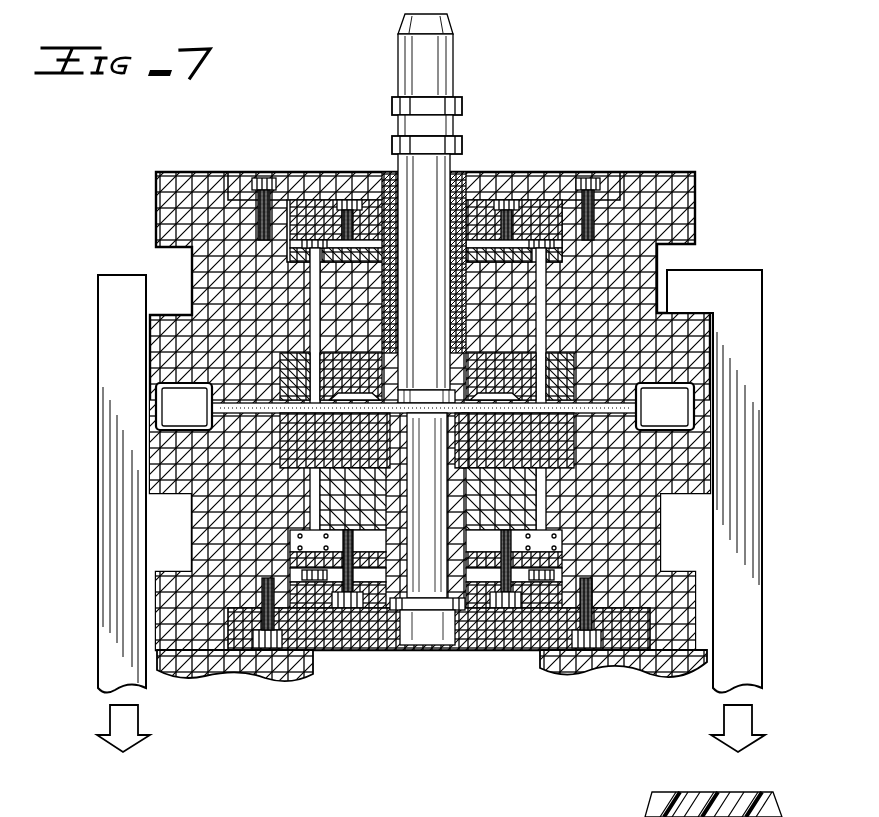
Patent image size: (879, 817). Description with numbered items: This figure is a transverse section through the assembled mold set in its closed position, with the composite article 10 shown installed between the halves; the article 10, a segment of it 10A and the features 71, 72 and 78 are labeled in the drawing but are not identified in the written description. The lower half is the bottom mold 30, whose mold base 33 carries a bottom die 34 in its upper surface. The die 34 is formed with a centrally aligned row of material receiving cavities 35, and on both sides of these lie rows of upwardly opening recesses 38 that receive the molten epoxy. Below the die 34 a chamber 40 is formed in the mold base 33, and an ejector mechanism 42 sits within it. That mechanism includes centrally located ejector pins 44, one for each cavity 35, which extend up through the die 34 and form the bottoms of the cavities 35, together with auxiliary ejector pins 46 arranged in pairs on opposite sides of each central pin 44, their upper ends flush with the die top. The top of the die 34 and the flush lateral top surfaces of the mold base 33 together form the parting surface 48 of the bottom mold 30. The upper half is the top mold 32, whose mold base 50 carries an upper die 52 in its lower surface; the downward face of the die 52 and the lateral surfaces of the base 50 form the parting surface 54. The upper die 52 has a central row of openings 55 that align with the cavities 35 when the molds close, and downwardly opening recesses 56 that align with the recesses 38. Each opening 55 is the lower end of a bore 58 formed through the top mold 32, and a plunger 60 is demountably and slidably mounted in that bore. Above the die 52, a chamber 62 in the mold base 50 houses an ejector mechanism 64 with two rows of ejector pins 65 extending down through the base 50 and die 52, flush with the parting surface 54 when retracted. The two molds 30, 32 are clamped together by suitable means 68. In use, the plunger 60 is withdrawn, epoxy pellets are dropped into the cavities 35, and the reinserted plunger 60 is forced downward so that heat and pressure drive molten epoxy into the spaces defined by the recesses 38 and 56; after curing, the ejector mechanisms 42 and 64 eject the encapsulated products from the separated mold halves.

The workpiece strip 10 is at (598, 400).
The cut workpiece segment 10A is at (780, 804).
The bottom mold 30 is at (172, 598).
The top mold 32 is at (700, 158).
The mold base 33 is at (200, 652).
The bottom die 34 is at (280, 418).
The material receiving cavities 35 is at (458, 416).
The recesses 38 is at (348, 416).
The chamber 40 is at (290, 548).
The ejector mechanism 42 is at (320, 613).
The centrally located ejector pins 44 is at (452, 625).
The auxiliary ejector pins 46 is at (302, 510).
The parting surface 48 is at (622, 410).
The mold base 50 is at (606, 182).
The upper die 52 is at (574, 375).
The parting surface 54 is at (240, 400).
The openings 55 is at (434, 390).
The recesses 56 is at (364, 396).
The bore 58 is at (448, 200).
The plunger 60 is at (455, 82).
The chamber 62 is at (518, 212).
The ejector mechanism 64 is at (328, 226).
The ejector pins 65 is at (300, 272).
The clamping means 68 is at (100, 565).
The strip edge 71 is at (598, 816).
The strip portion 72 is at (645, 805).
The strip feature 78 is at (522, 816).